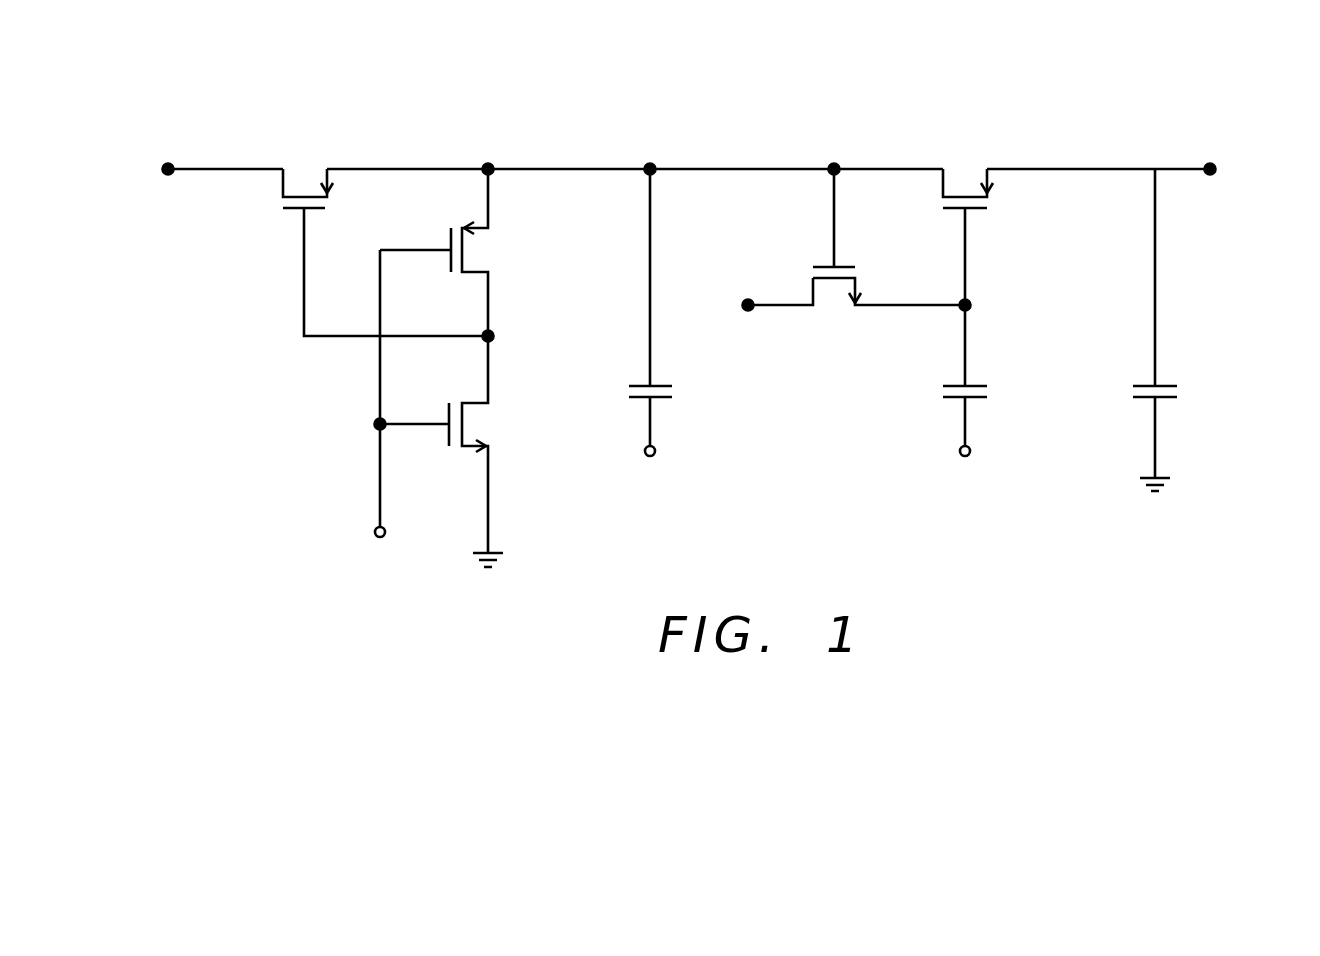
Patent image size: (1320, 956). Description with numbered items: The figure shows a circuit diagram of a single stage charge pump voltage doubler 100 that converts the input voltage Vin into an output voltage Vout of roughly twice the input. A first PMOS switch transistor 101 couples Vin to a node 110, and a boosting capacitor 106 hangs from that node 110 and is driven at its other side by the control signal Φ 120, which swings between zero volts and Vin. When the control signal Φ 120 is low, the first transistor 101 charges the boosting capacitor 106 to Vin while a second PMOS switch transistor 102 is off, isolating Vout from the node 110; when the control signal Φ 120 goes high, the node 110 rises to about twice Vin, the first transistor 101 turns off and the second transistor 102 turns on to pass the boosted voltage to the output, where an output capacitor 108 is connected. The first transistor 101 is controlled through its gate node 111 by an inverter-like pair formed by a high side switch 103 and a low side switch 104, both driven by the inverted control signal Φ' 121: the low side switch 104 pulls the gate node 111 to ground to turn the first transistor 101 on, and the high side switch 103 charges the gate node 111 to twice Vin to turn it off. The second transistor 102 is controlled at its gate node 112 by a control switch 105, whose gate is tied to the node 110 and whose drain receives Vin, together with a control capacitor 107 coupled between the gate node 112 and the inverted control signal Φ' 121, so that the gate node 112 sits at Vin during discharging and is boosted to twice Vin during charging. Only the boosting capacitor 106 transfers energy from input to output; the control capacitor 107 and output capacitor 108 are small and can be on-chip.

The single stage charge pump voltage doubler 100 is at (237, 122).
The first PMOS switch transistor 101 is at (270, 192).
The second PMOS switch transistor 102 is at (1003, 192).
The high side switch 103 is at (490, 251).
The low side switch 104 is at (490, 428).
The control switch 105 is at (834, 310).
The boosting capacitor 106 is at (678, 391).
The control capacitor 107 is at (993, 393).
The output capacitor 108 is at (1183, 393).
The node 110 is at (650, 164).
The gate node 111 is at (294, 338).
The gate node 112 is at (977, 307).
The control signal Φ 120 is at (667, 483).
The inverted control signal Φ' 121 is at (366, 566).